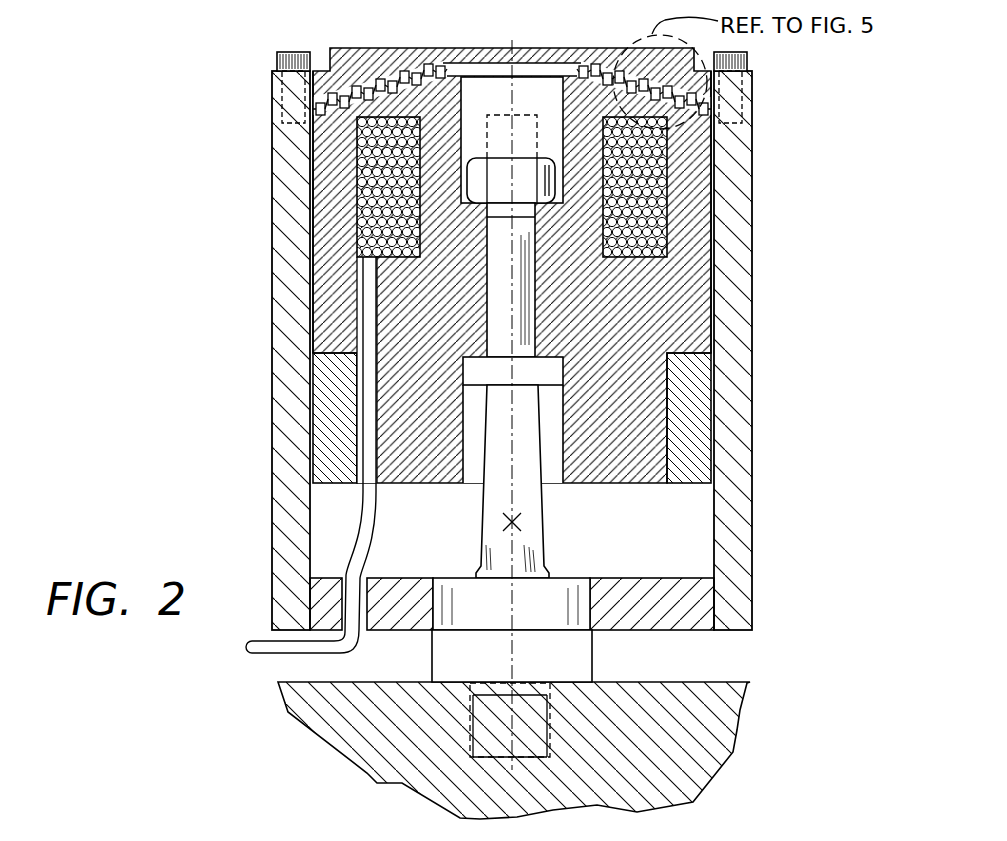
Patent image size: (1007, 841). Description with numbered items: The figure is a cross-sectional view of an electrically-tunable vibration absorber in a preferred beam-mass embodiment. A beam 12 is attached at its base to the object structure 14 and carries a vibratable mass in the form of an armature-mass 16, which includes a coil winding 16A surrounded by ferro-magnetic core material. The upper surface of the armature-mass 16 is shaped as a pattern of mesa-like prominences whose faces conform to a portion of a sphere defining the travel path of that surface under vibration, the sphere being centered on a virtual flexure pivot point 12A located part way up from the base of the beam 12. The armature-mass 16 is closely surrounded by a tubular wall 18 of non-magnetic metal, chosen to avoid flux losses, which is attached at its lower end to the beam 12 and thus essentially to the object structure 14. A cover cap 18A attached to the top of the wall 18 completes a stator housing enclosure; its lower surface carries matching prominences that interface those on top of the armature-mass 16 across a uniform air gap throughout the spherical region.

The beam 12 is at (533, 508).
The virtual flexure pivot point 12A is at (520, 527).
The object structure 14 is at (740, 682).
The armature-mass 16 is at (264, 478).
The coil winding 16A is at (372, 173).
The tubular wall 18 is at (748, 213).
The cover cap 18A is at (352, 53).